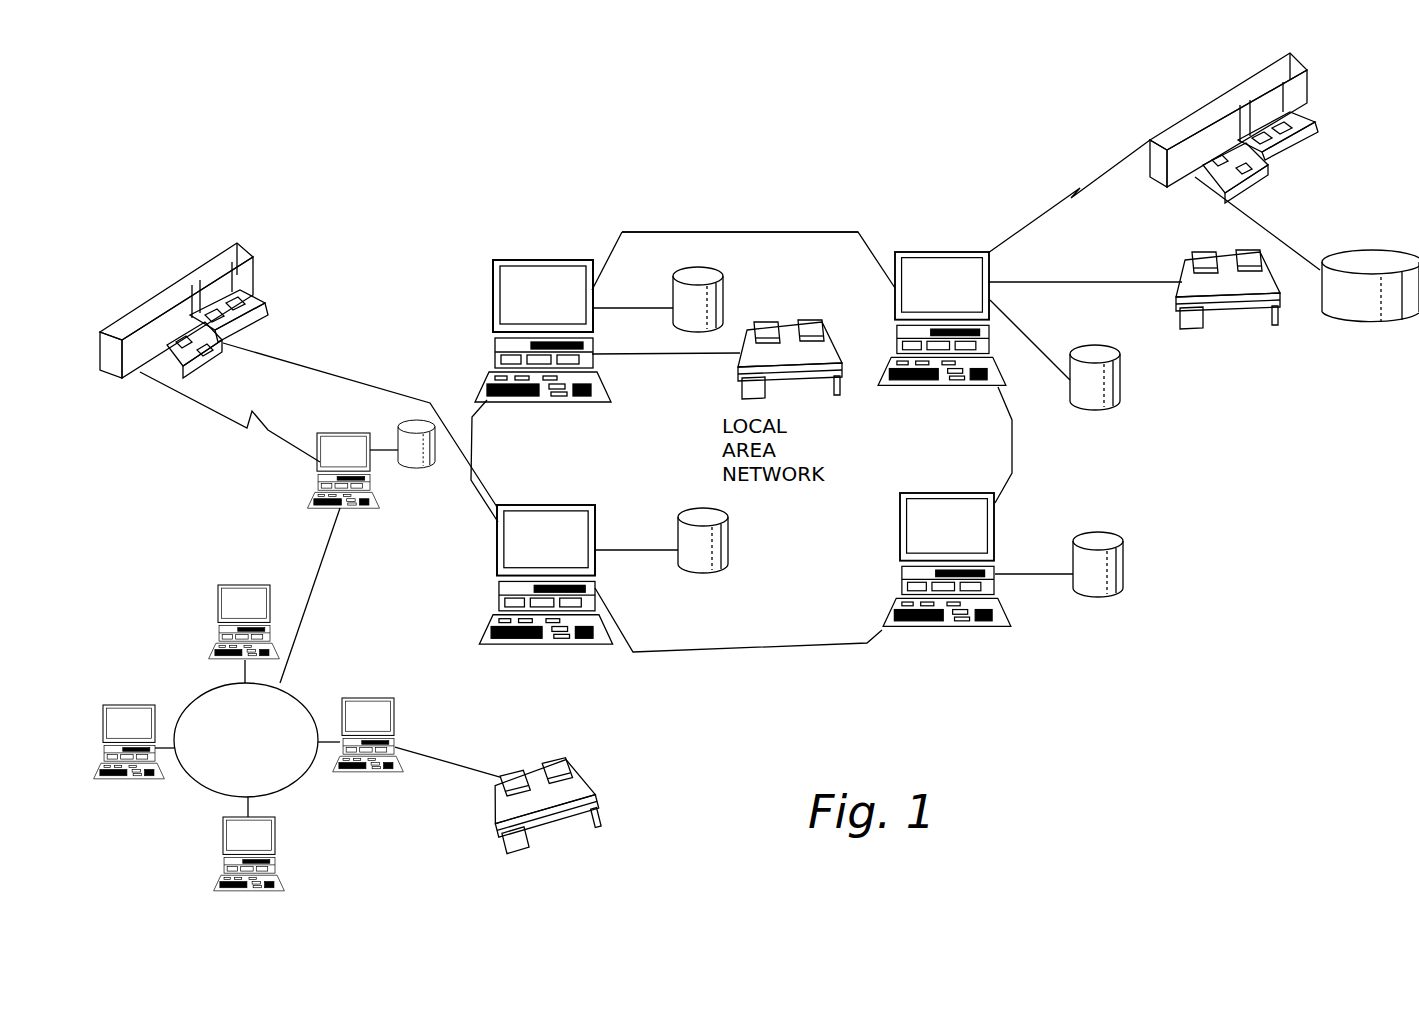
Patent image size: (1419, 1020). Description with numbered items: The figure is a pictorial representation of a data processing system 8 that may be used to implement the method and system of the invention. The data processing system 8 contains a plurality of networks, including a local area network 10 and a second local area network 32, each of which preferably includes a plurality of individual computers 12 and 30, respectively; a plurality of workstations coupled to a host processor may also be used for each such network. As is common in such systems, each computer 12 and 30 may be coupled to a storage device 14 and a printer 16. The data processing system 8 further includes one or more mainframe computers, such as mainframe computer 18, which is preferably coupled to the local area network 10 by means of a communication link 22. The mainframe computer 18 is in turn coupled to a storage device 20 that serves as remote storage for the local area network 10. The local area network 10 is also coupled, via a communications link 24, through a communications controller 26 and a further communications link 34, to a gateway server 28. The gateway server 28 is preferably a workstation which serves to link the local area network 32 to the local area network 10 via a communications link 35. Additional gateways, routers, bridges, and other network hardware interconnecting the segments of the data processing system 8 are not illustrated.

The data processing system 8 is at (774, 190).
The local area network 10 is at (777, 653).
The computer 12 is at (562, 260).
The storage device 14 is at (722, 283).
The printer 16 is at (784, 333).
The mainframe computer 18 is at (1228, 88).
The storage device 20 is at (1395, 250).
The communication link 22 is at (1106, 177).
The communications link 24 is at (347, 373).
The communications controller 26 is at (250, 255).
The gateway server 28 is at (343, 433).
The computer 30 is at (254, 585).
The local area network 32 is at (203, 785).
The communications link 34 is at (263, 440).
The communications link 35 is at (307, 617).